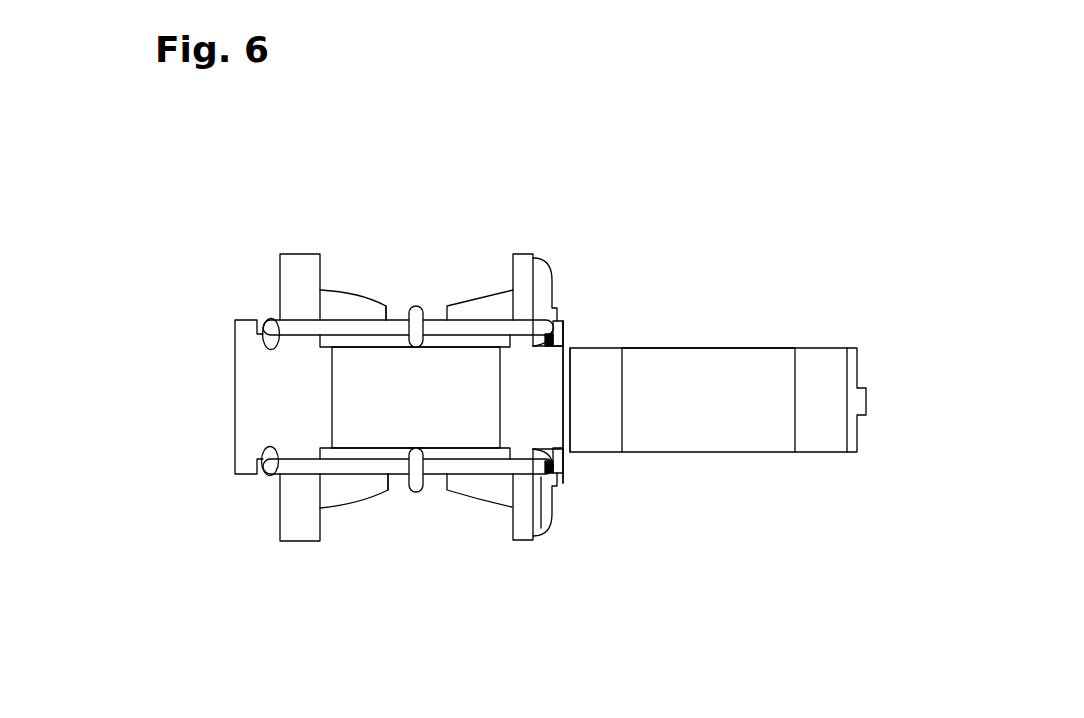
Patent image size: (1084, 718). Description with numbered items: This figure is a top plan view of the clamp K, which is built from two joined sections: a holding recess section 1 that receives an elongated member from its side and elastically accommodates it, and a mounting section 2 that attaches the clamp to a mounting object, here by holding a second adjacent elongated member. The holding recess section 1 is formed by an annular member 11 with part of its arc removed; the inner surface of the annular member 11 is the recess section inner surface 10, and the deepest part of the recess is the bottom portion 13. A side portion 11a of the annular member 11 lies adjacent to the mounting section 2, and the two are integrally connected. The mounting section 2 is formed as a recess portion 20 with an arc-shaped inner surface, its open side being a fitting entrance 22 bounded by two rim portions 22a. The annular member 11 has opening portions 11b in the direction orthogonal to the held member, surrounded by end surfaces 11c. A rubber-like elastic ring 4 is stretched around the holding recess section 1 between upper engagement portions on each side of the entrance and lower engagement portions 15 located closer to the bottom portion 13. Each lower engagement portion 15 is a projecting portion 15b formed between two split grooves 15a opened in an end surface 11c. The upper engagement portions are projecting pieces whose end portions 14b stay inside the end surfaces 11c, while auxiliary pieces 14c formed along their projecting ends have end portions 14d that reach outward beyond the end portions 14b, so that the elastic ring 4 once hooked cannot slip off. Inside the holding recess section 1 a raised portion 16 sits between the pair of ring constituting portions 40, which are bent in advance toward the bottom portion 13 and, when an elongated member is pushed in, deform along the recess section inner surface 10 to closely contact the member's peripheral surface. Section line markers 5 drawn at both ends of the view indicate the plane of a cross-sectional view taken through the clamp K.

The holding recess section 1 is at (345, 412).
The mounting section 2 is at (720, 440).
The rubber-like elastic ring 4 is at (293, 253).
The section line 5 is at (212, 392).
The recess section inner surface 10 is at (417, 243).
The annular member 11 is at (250, 400).
The side portion 11a is at (543, 510).
The opening portions 11b is at (470, 280).
The end surfaces 11c is at (490, 300).
The bottom portion 13 is at (377, 427).
The end portions 14b is at (275, 318).
The auxiliary pieces 14c is at (567, 330).
The end portions 14d is at (243, 318).
The lower engagement portions 15 is at (415, 332).
The split grooves 15a is at (397, 310).
The projecting portion 15b is at (420, 492).
The raised portion 16 is at (475, 402).
The recess portion 20 is at (718, 400).
The fitting entrance 22 is at (740, 373).
The rim portions 22a is at (622, 410).
The ring constituting portions 40 is at (530, 537).
The clamp K is at (670, 243).